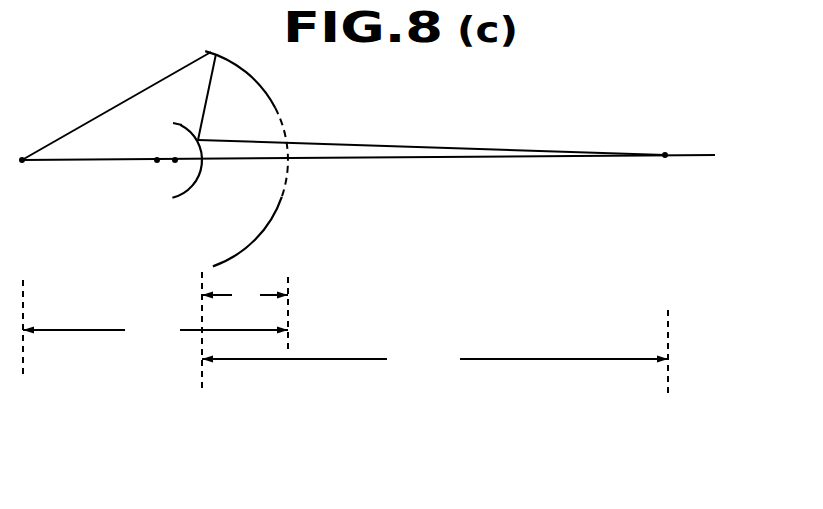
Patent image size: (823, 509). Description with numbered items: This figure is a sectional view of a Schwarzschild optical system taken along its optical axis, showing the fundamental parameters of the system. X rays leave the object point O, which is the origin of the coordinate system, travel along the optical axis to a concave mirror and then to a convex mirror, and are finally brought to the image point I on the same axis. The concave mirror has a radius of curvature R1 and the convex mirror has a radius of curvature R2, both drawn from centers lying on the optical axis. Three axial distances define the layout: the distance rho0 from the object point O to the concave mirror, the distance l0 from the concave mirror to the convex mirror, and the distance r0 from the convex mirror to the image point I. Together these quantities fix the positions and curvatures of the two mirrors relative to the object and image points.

The object point O is at (23, 180).
The image point I is at (661, 168).
The radius of curvature of the concave mirror R1 is at (175, 160).
The radius of curvature of the convex mirror R2 is at (173, 123).
The distance from the object point to the concave mirror rho0 is at (155, 328).
The distance from the concave mirror to the convex mirror l0 is at (245, 332).
The distance from the convex mirror to the image point r0 is at (435, 353).